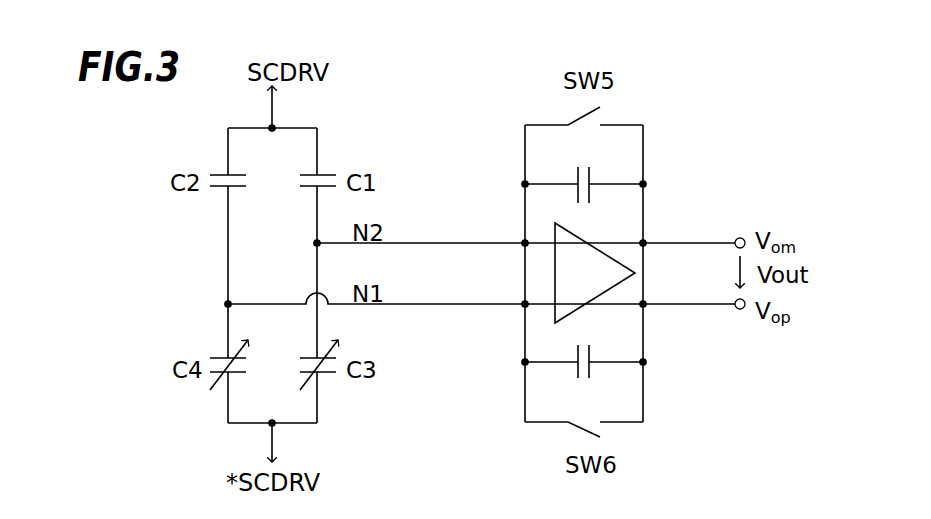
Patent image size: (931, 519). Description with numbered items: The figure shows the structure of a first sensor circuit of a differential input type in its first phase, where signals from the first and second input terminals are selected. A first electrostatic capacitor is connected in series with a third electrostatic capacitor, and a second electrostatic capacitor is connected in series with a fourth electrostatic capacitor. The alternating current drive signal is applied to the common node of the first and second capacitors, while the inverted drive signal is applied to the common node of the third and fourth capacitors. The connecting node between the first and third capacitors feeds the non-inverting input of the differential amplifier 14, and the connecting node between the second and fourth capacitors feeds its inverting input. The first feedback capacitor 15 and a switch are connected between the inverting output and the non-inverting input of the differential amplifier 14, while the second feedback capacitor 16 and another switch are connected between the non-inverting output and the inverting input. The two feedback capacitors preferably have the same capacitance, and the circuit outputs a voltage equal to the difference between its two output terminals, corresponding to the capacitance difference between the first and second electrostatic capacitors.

The differential amplifier 14 is at (640, 273).
The first feedback capacitor 15 is at (628, 165).
The second feedback capacitor 16 is at (628, 347).